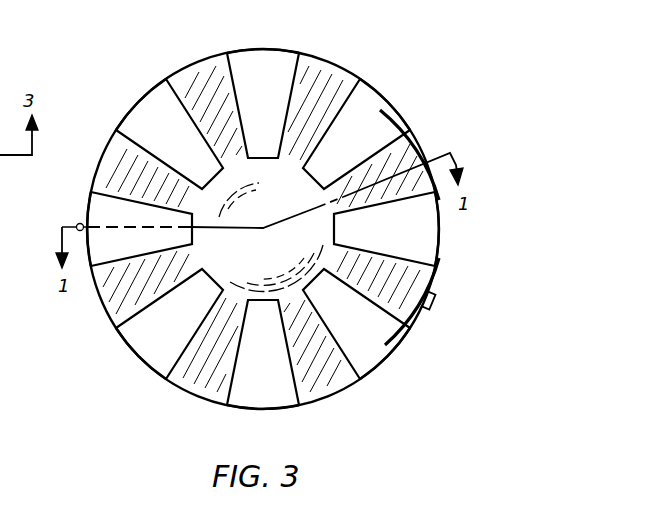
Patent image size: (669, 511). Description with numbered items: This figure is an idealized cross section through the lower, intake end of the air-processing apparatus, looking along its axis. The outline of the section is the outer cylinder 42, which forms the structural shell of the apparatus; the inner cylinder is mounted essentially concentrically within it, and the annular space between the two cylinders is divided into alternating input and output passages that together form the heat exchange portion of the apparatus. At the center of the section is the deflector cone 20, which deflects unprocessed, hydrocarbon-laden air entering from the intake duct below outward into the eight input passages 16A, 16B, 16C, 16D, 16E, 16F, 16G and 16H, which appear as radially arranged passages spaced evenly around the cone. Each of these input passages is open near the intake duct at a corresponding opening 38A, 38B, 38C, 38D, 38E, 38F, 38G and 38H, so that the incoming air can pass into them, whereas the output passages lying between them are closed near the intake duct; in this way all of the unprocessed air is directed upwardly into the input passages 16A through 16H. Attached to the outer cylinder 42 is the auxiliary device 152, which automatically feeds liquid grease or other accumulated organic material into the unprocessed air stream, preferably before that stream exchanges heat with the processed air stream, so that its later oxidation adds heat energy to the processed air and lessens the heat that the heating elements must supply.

The input passage 16A is at (135, 250).
The input passage 16B is at (188, 146).
The input passage 16C is at (278, 101).
The input passage 16D is at (373, 141).
The input passage 16E is at (398, 233).
The input passage 16F is at (371, 335).
The input passage 16G is at (274, 370).
The input passage 16H is at (182, 328).
The deflector cone 20 is at (258, 262).
The opening 38A is at (113, 212).
The opening 38B is at (152, 113).
The opening 38C is at (250, 64).
The opening 38D is at (388, 113).
The opening 38E is at (427, 230).
The opening 38F is at (385, 343).
The opening 38G is at (240, 408).
The opening 38H is at (152, 343).
The outer cylinder 42 is at (323, 60).
The auxiliary device 152 is at (437, 305).